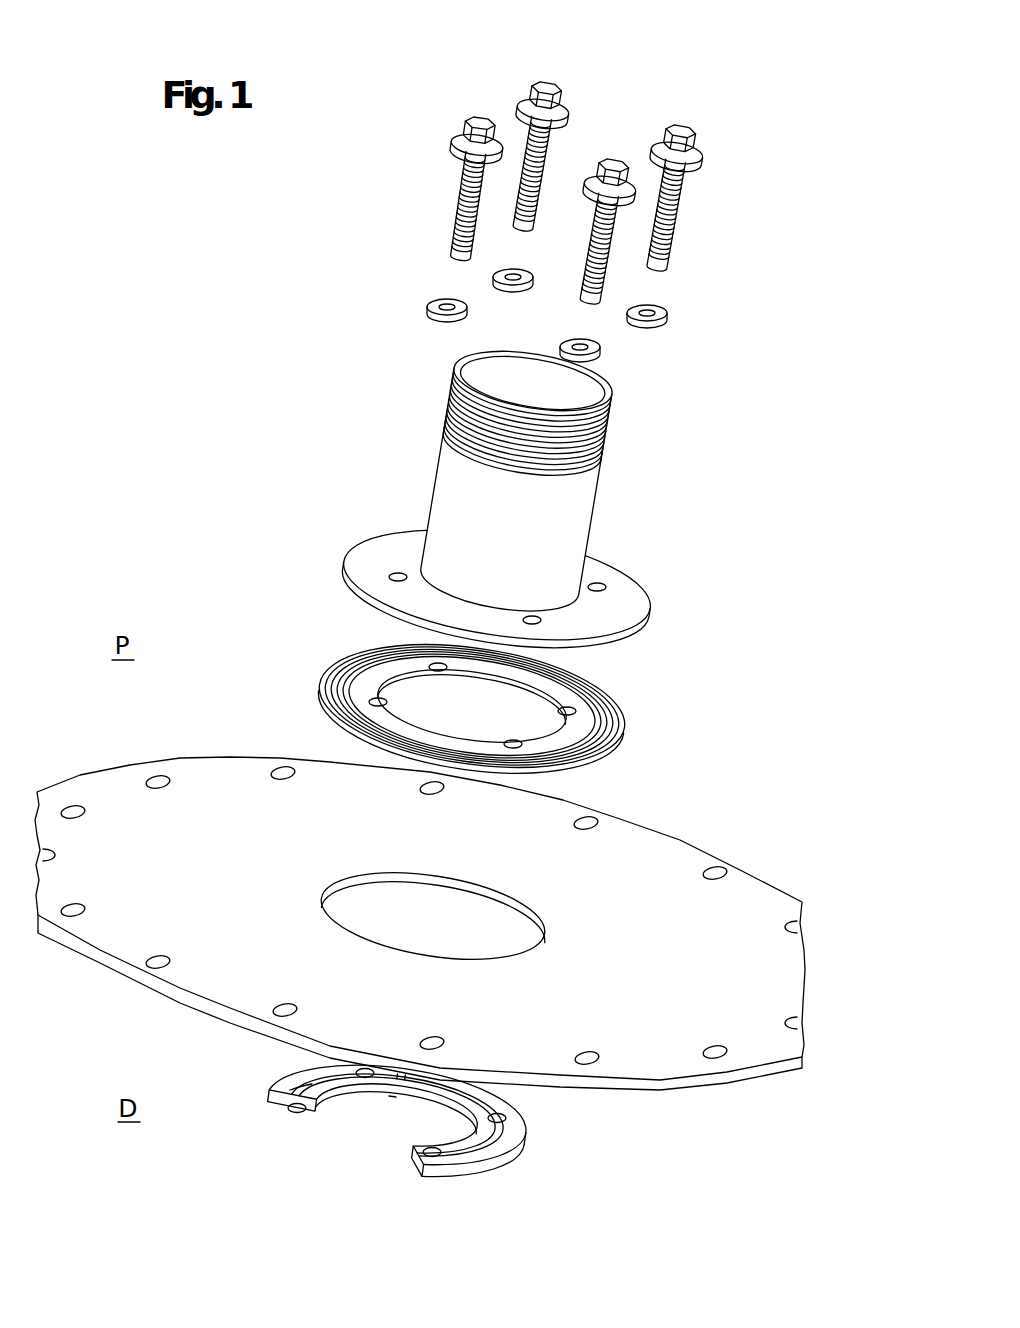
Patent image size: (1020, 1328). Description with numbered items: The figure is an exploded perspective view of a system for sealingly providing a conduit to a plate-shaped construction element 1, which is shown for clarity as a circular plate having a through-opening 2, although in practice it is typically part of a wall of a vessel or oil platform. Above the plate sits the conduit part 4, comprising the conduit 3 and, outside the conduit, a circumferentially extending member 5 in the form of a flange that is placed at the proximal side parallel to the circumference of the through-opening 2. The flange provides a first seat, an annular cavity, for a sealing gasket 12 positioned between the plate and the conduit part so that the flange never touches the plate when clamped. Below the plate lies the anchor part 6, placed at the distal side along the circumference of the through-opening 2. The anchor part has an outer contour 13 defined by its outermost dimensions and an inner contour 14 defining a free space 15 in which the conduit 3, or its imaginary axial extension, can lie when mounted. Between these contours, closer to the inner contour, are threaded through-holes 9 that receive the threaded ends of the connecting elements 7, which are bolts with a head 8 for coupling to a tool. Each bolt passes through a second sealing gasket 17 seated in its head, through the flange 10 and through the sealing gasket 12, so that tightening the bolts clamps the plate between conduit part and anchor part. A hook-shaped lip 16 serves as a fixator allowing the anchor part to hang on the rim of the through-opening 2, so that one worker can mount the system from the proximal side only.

The plate-shaped construction element 1 is at (663, 870).
The through-opening 2 is at (450, 913).
The conduit 3 is at (583, 497).
The conduit part 4 is at (408, 478).
The circumferentially extending member 5 is at (630, 607).
The anchor part 6 is at (520, 1147).
The connecting element 7 is at (470, 180).
The head 8 is at (480, 125).
The through-hole 9 is at (365, 1073).
The flange 10 is at (397, 575).
The sealing gasket 12 is at (607, 727).
The outer contour 13 is at (488, 1168).
The inner contour 14 is at (393, 1097).
The free space 15 is at (410, 1123).
The lip 16 is at (287, 1088).
The second sealing gasket 17 is at (493, 273).